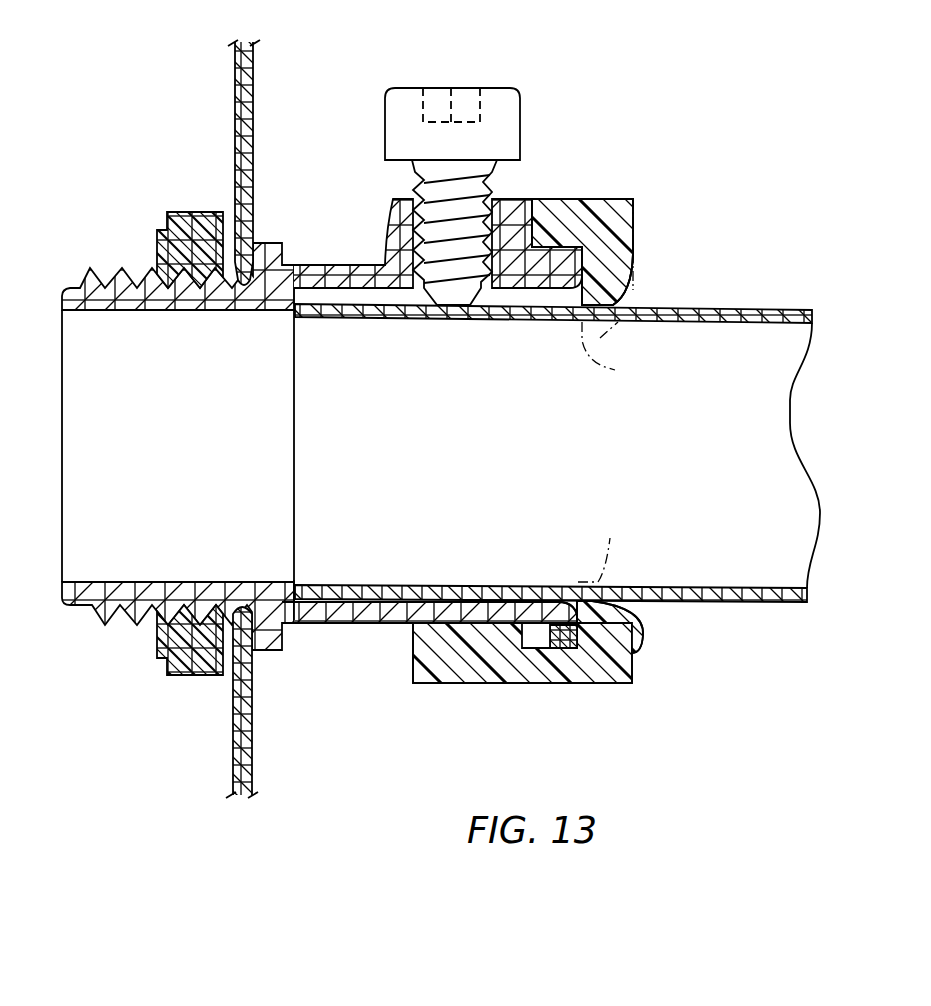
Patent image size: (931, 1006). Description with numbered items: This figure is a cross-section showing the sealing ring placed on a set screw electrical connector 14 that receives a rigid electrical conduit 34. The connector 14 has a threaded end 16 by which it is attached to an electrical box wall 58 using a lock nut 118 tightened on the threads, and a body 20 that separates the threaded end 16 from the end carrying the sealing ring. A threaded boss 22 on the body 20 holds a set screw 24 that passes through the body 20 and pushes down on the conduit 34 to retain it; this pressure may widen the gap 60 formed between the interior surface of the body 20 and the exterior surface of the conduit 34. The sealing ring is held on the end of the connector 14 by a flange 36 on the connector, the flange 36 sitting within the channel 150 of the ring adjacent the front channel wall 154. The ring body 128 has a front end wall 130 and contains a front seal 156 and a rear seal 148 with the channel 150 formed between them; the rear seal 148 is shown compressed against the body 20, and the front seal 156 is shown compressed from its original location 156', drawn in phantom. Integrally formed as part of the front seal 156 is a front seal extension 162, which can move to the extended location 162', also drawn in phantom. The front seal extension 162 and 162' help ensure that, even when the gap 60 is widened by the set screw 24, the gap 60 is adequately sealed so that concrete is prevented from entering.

The set screw electrical connector 14 is at (292, 676).
The threaded end 16 is at (86, 272).
The body 20 is at (355, 624).
The threaded boss 22 is at (395, 215).
The set screw 24 is at (516, 104).
The electrical conduit 34 is at (718, 308).
The flange 36 is at (566, 642).
The electrical box wall 58 is at (254, 136).
The gap 60 is at (408, 296).
The nut 118 is at (190, 214).
The ring body 128 is at (456, 684).
The front end wall 130 is at (636, 234).
The rear seal 148 is at (516, 598).
The channel 150 is at (540, 640).
The rounded edge 154 is at (572, 600).
The front seal 156 is at (634, 650).
The front seal original location 156' is at (622, 553).
The front seal extension 162 is at (669, 276).
The front seal extension extended location 162' is at (641, 351).